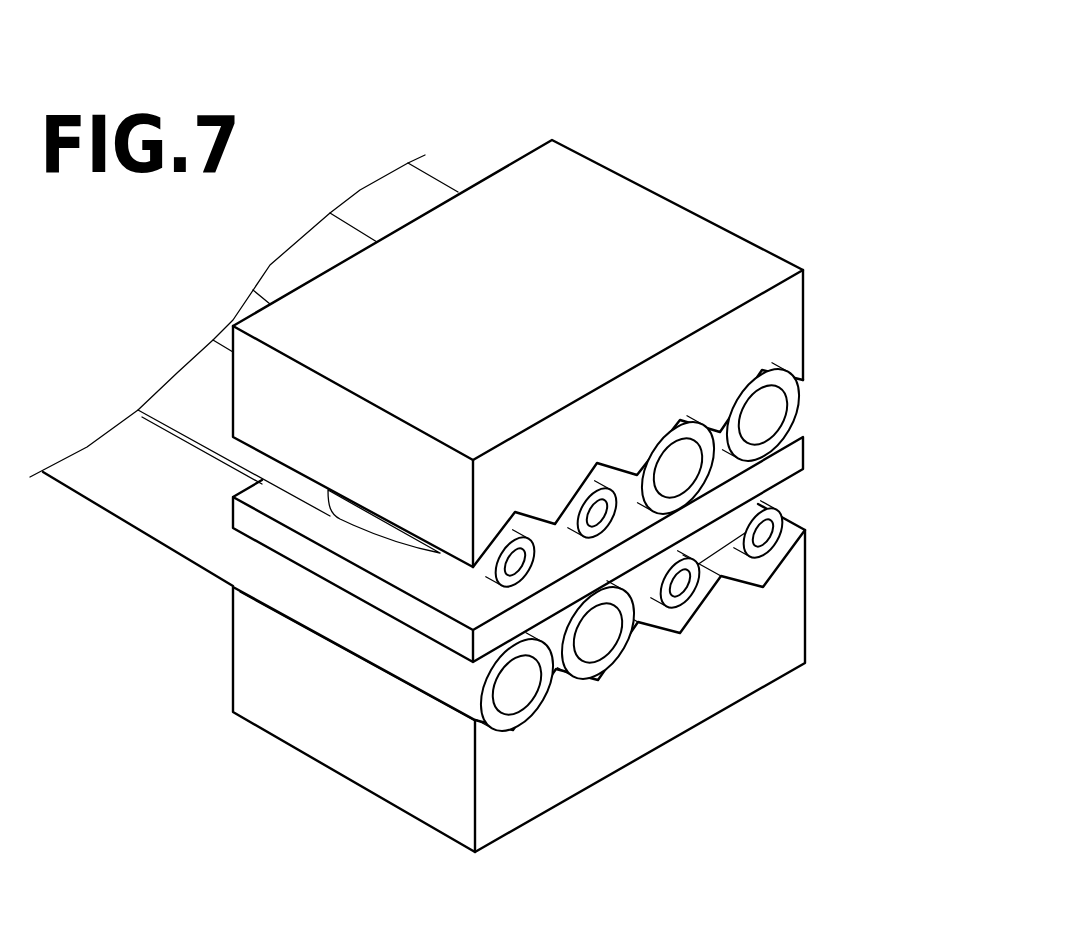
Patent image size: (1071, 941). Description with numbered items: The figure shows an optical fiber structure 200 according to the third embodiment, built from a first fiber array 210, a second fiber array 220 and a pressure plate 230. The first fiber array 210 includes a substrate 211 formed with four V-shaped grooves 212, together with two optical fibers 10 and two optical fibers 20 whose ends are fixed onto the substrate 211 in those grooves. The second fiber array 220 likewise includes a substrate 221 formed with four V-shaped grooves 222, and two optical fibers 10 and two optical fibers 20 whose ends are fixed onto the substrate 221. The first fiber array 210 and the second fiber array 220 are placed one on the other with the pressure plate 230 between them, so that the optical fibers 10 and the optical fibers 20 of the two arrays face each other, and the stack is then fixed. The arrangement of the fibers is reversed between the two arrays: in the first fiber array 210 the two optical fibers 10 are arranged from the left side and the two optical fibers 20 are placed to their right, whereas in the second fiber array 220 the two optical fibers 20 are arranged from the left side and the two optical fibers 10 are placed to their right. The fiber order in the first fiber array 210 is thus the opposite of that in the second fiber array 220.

The optical fiber structure 200 is at (509, 86).
The first fiber array 210 is at (826, 304).
The substrate 211 is at (615, 195).
The V-shaped grooves 212 is at (515, 512).
The second fiber array 220 is at (827, 600).
The substrate 221 is at (390, 805).
The V-shaped grooves 222 is at (513, 730).
The pressure plate 230 is at (812, 460).
The optical fibers 10 is at (528, 537).
The optical fibers 20 is at (782, 407).